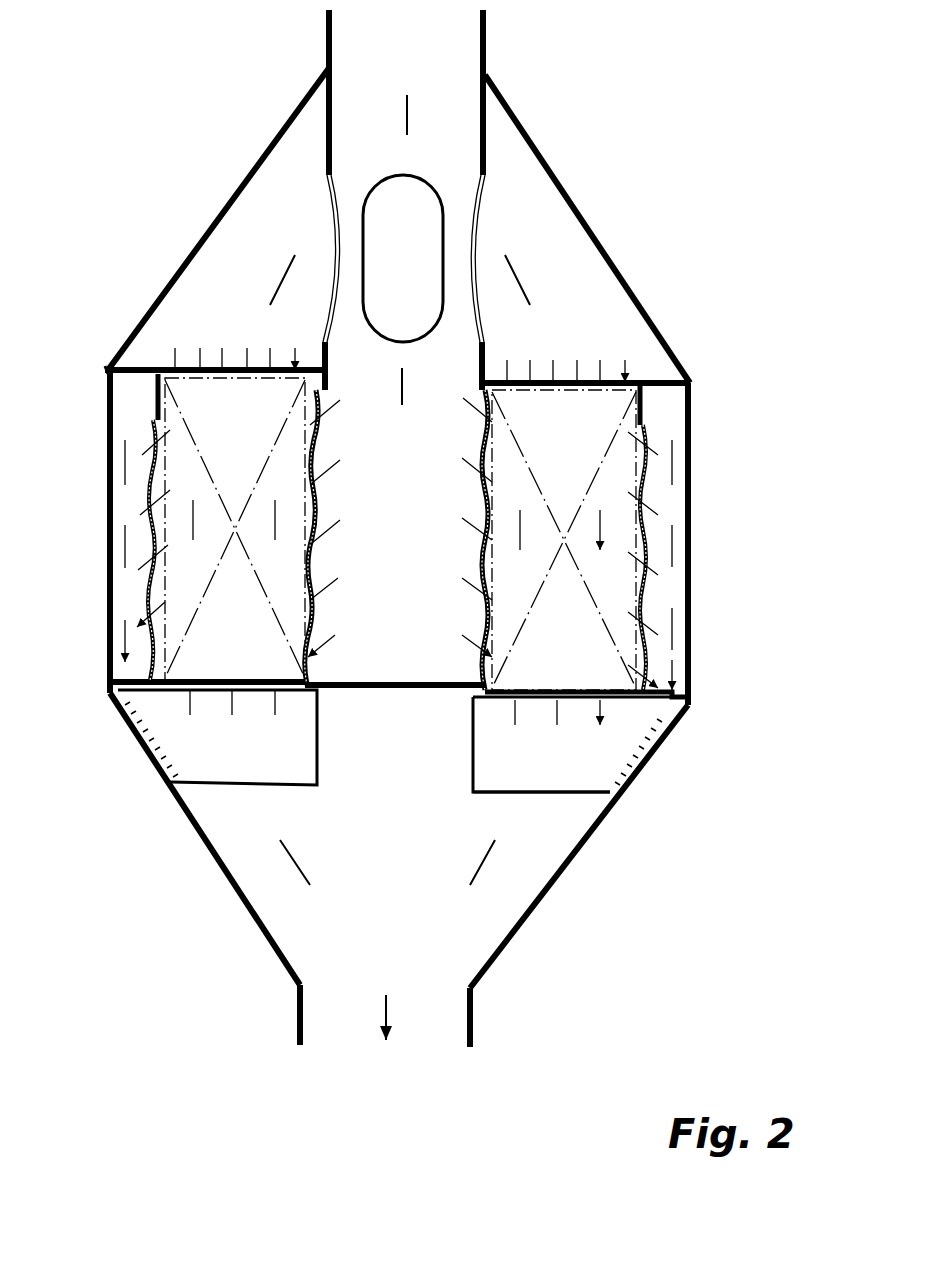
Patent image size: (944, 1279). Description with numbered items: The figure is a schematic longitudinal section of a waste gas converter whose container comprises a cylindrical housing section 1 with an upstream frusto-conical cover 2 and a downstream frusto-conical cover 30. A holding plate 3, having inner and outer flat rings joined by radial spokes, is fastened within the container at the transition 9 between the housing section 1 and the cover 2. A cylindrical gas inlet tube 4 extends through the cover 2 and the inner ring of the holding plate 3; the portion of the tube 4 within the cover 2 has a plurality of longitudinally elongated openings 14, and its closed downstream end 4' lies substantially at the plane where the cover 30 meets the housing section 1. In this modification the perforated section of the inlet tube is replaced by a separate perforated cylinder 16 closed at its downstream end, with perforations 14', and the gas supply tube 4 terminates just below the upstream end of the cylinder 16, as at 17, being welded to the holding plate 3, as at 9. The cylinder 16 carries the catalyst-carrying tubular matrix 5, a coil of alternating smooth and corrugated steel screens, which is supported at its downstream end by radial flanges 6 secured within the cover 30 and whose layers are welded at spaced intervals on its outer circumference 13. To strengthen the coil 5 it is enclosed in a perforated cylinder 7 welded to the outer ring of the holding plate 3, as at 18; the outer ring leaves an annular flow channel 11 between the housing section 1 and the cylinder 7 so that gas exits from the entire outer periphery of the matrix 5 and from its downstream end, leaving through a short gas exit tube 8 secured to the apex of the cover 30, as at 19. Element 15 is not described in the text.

The cylindrical housing section 1 is at (690, 507).
The frusto-conical cover 2 is at (547, 165).
The holding plate 3 is at (658, 391).
The gas inlet tube 4 is at (445, 200).
The closed downstream end of gas inlet tube 4' is at (395, 721).
The catalyst-carrying tubular matrix 5 is at (605, 597).
The radial flanges 6 is at (617, 748).
The perforated cylinder 7 is at (645, 645).
The gas exit tube 8 is at (472, 1030).
The transition between housing section and cover 9 is at (486, 376).
The annular flow channel 11 is at (672, 550).
The outer circumference of coil 13 is at (690, 695).
The longitudinally elongated openings 14 is at (441, 258).
The perforations 14' is at (391, 537).
The bin bottom 15 is at (620, 790).
The perforated cylinder 16 is at (360, 667).
The termination of gas supply tube 17 is at (481, 403).
The weld of perforated cylinder to holding plate 18 is at (652, 392).
The attachment of exit tube to cover apex 19 is at (487, 78).
The frusto-conical cover 30 is at (555, 893).